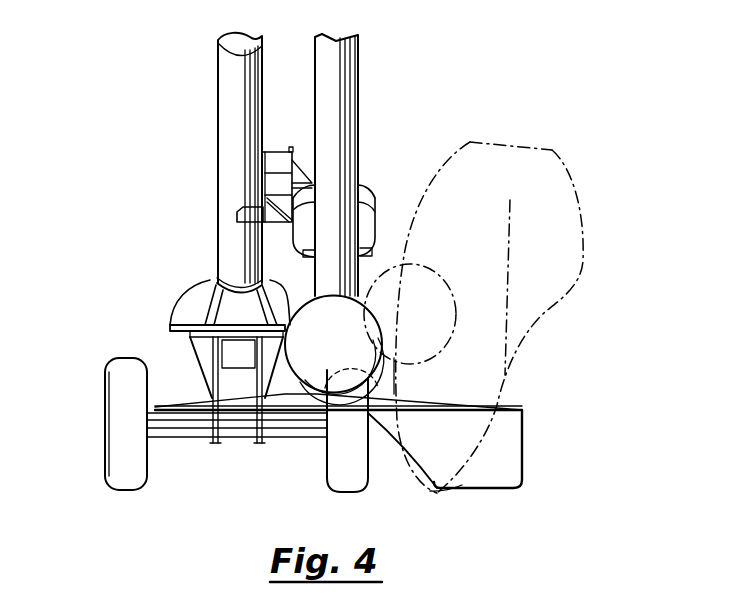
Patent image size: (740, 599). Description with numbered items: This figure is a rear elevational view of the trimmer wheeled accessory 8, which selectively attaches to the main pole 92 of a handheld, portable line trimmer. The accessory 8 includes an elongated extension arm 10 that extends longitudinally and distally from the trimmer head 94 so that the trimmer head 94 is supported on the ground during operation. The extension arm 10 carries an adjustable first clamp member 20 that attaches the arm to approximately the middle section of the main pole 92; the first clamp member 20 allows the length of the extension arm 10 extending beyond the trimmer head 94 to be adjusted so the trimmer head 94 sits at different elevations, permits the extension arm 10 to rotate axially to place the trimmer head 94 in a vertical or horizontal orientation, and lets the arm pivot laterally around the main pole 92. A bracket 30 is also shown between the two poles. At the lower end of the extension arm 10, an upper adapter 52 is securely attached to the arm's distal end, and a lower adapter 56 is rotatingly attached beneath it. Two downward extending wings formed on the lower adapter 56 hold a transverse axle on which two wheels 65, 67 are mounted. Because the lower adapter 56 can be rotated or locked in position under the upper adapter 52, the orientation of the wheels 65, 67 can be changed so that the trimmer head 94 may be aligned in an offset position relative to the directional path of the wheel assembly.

The trimmer wheeled accessory 8 is at (398, 88).
The extension arm 10 is at (237, 103).
The main pole 92 is at (342, 62).
The first clamp member 20 is at (372, 210).
The bracket 30 is at (252, 203).
The upper adapter 52 is at (198, 312).
The lower adapter 56 is at (190, 344).
The wheel 67 is at (123, 375).
The wheel 65 is at (343, 469).
The trimmer head 94 is at (510, 155).